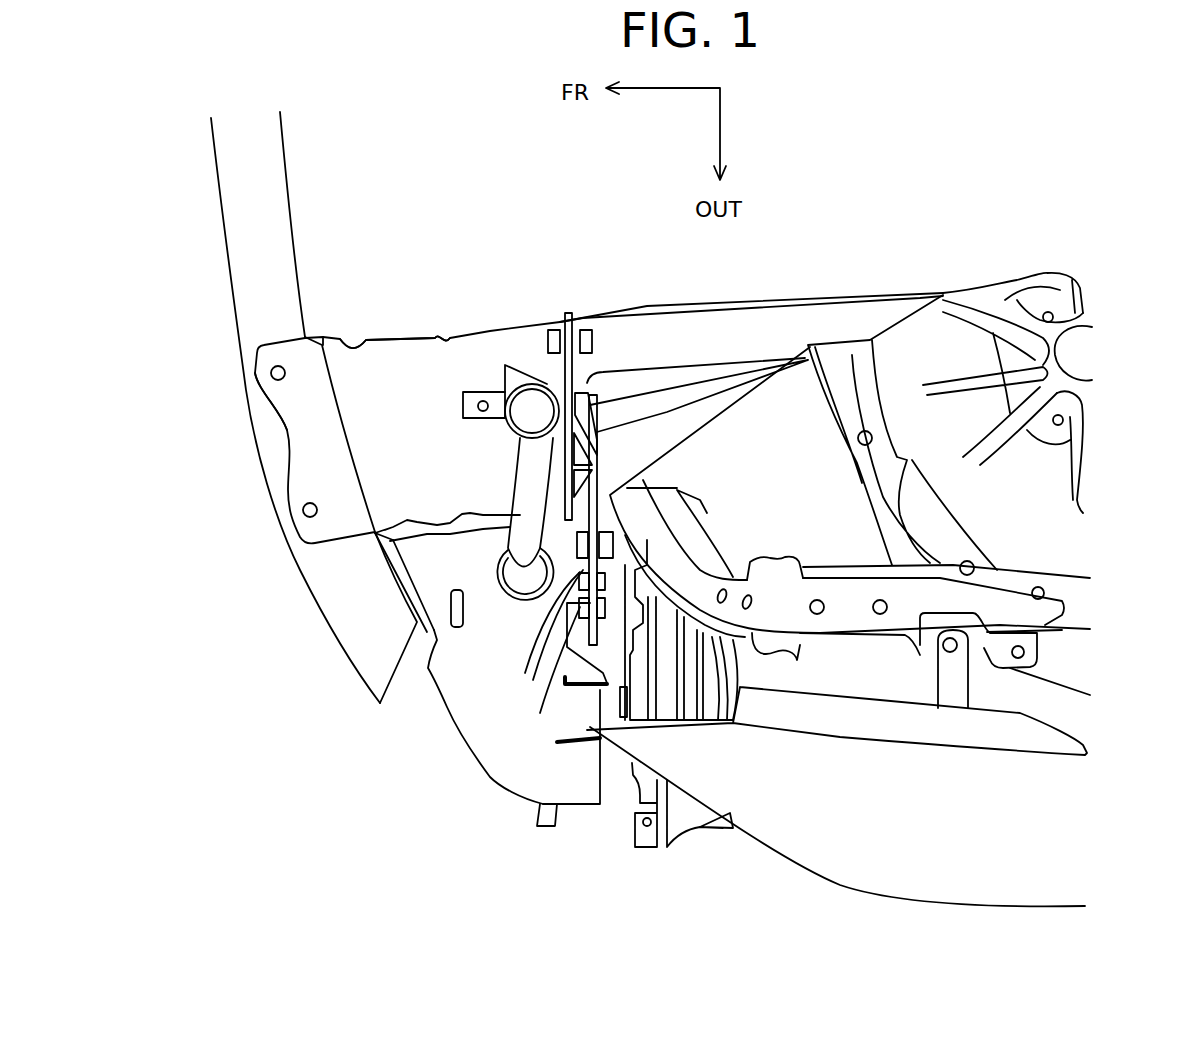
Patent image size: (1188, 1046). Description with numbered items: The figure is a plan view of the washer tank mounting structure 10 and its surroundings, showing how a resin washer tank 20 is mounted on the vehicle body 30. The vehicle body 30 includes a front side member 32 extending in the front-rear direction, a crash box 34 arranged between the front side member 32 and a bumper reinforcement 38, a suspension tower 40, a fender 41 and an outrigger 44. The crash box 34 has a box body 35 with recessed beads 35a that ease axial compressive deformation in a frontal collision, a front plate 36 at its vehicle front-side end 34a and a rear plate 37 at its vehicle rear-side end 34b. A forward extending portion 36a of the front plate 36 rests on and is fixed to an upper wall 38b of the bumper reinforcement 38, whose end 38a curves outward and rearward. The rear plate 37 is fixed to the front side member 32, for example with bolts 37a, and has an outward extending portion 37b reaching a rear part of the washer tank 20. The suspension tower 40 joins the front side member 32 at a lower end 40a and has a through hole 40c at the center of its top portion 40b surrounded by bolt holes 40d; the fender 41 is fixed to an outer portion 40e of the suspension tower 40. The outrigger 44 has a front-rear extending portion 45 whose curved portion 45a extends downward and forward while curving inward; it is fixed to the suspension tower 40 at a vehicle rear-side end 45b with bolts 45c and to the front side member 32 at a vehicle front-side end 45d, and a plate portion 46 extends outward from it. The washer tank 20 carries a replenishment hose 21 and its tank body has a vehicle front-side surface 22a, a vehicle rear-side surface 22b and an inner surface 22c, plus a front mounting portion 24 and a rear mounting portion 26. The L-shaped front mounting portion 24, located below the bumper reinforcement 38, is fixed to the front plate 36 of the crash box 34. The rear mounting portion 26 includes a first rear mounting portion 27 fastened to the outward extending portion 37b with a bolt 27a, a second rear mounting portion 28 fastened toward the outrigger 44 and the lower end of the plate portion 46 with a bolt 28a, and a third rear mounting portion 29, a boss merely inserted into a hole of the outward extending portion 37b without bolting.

The washer tank mounting structure 10 is at (438, 750).
The washer tank 20 is at (497, 790).
The replenishment hose 21 is at (530, 473).
The vehicle front-side surface 22a is at (430, 667).
The vehicle rear-side surface 22b is at (609, 787).
The inner surface 22c is at (443, 520).
The front mounting portion 24 is at (383, 550).
The rear mounting portion 26 is at (552, 622).
The first rear mounting portion 27 is at (537, 637).
The bolt 27a is at (533, 667).
The second rear mounting portion 28 is at (600, 720).
The bolt 28a is at (620, 700).
The third rear mounting portion 29 is at (545, 706).
The vehicle body 30 is at (823, 307).
The front side member 32 is at (745, 327).
The crash box 34 is at (528, 332).
The vehicle front-side end 34a is at (350, 426).
The vehicle rear-side end 34b is at (527, 443).
The box body 35 is at (487, 350).
The recessed beads 35a is at (447, 340).
The front plate 36 is at (310, 350).
The forward extending portion 36a is at (308, 453).
The rear plate 37 is at (597, 458).
The bolts 37a is at (585, 325).
The outward extending portion 37b is at (553, 743).
The bumper reinforcement 38 is at (235, 160).
The end 38a is at (367, 643).
The upper wall 38b is at (258, 244).
The suspension tower 40 is at (1033, 300).
The lower end 40a is at (973, 292).
The top portion 40b is at (1073, 433).
The through hole 40c is at (1147, 369).
The bolt holes 40d is at (1053, 314).
The outer portion 40e is at (1067, 653).
The fender 41 is at (810, 843).
The outrigger 44 is at (837, 650).
The front-rear extending portion 45 is at (820, 577).
The curved portion 45a is at (697, 573).
The vehicle rear-side end 45b is at (1047, 618).
The bolts 45c is at (1038, 587).
The vehicle front-side end 45d is at (700, 484).
The plate portion 46 is at (700, 684).